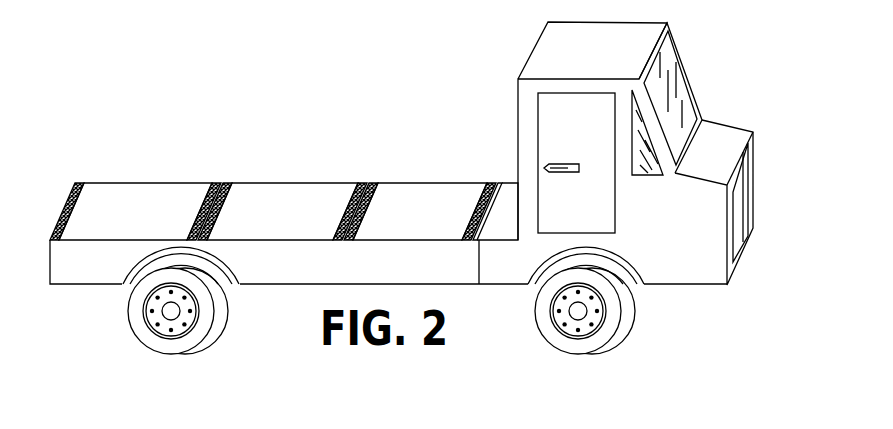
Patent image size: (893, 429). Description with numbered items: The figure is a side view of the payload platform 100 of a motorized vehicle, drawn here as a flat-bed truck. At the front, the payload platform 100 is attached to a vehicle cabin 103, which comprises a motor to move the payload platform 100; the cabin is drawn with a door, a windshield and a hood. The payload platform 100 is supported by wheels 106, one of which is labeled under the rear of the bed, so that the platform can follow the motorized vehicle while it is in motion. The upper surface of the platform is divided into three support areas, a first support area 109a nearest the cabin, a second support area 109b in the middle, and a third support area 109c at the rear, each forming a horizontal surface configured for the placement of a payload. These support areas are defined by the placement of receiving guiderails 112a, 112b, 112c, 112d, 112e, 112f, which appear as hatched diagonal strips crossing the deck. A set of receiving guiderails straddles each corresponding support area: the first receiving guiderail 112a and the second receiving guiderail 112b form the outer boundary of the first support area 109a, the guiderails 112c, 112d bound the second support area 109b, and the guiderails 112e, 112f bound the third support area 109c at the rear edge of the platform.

The payload platform 100 is at (75, 356).
The vehicle cabin 103 is at (650, 21).
The wheels 106 is at (128, 302).
The first support area 109a is at (437, 186).
The second support area 109b is at (285, 189).
The third support area 109c is at (118, 186).
The first receiving guiderail 112a is at (465, 230).
The second receiving guiderail 112b is at (385, 184).
The receiving guiderail 112c is at (345, 220).
The receiving guiderail 112d is at (247, 173).
The receiving guiderail 112e is at (192, 222).
The receiving guiderail 112f is at (74, 197).